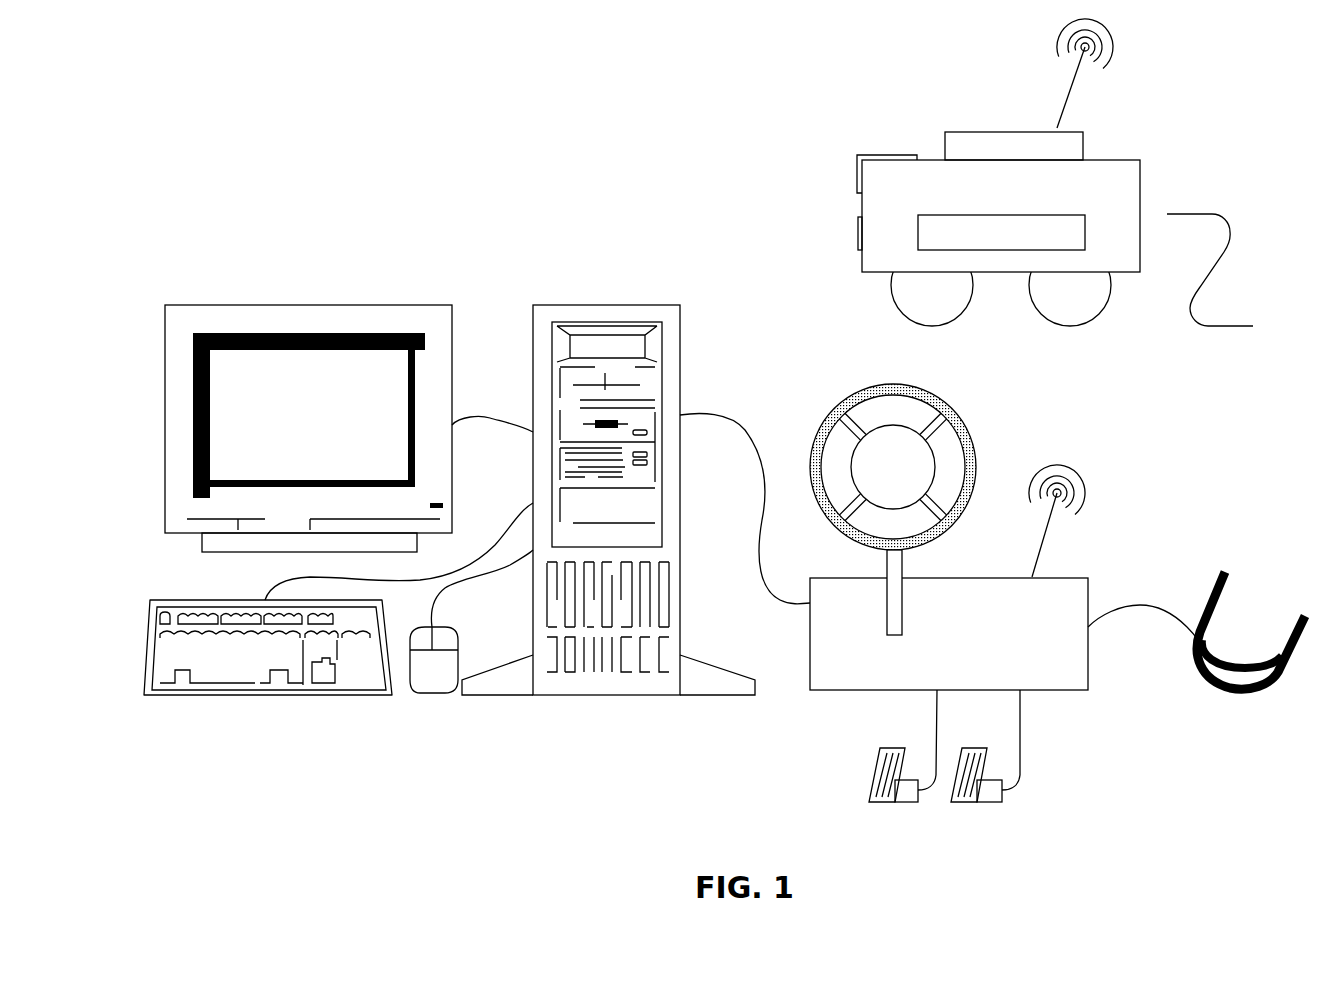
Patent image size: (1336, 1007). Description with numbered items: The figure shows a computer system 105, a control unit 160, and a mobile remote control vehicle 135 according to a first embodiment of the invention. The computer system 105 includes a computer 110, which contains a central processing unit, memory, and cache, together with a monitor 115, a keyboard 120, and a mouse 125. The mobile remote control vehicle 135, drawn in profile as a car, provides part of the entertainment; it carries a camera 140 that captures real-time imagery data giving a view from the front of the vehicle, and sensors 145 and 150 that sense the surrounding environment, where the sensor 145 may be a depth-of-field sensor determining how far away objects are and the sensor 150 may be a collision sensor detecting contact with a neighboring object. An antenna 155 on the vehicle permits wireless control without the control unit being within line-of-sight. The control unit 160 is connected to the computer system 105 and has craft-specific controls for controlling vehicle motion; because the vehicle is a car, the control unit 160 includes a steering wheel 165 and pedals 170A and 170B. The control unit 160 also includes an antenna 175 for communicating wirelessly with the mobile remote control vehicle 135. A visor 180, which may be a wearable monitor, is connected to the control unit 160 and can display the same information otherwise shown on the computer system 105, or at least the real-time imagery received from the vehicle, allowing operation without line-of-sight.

The computer system 105 is at (176, 206).
The computer 110 is at (570, 306).
The monitor 115 is at (202, 306).
The keyboard 120 is at (183, 697).
The mouse 125 is at (432, 697).
The mobile remote control vehicle 135 is at (855, 68).
The camera 140 is at (857, 168).
The sensor 145 is at (857, 228).
The sensor 150 is at (965, 215).
The antenna 155 is at (1066, 100).
The control unit 160 is at (1036, 404).
The steering wheel 165 is at (828, 410).
The pedal 170A is at (890, 805).
The pedal 170B is at (970, 805).
The antenna 175 is at (1045, 538).
The visor 180 is at (1227, 688).